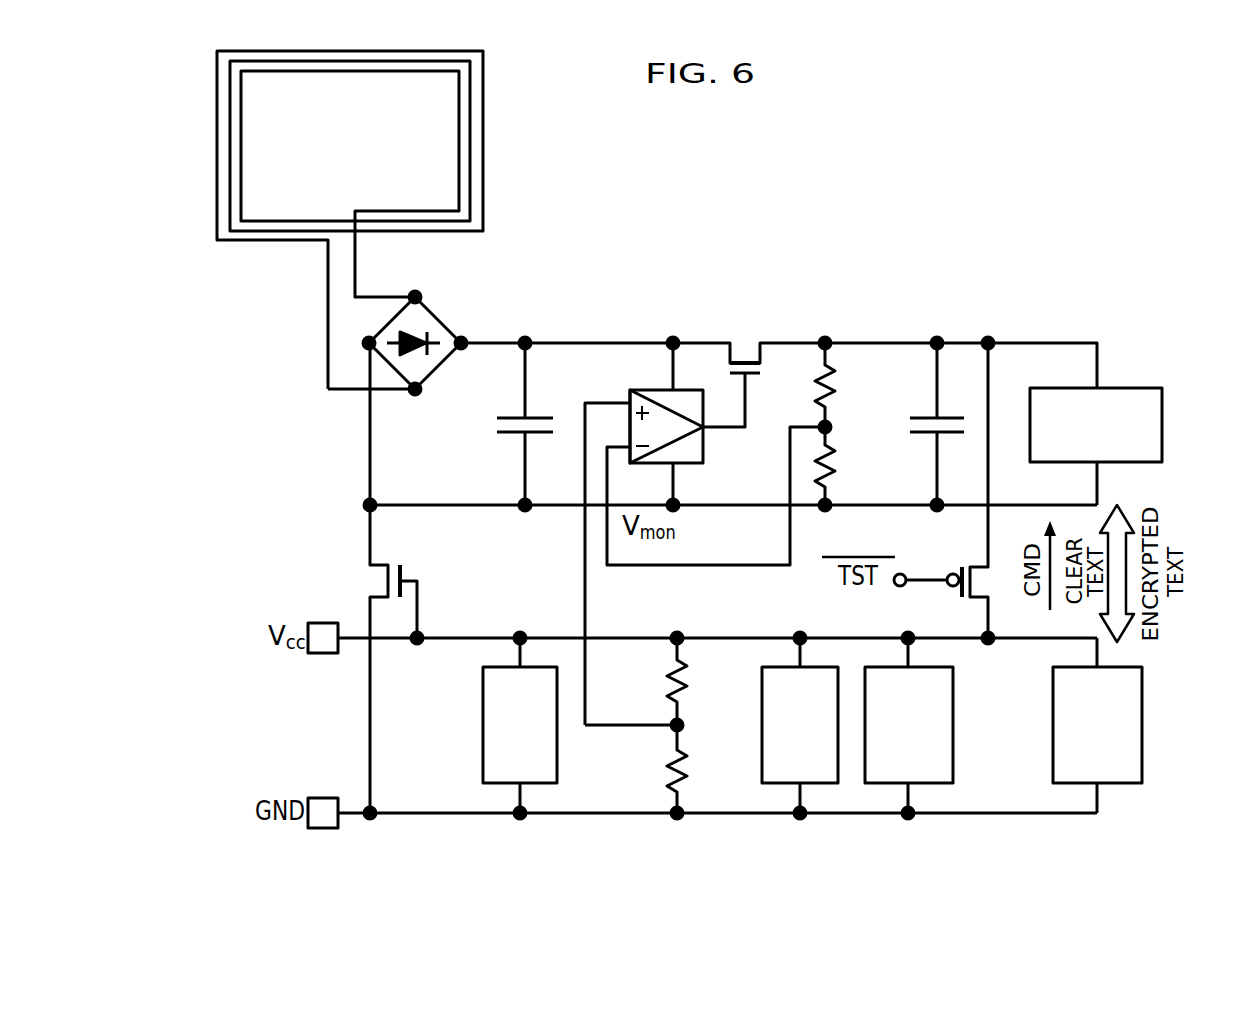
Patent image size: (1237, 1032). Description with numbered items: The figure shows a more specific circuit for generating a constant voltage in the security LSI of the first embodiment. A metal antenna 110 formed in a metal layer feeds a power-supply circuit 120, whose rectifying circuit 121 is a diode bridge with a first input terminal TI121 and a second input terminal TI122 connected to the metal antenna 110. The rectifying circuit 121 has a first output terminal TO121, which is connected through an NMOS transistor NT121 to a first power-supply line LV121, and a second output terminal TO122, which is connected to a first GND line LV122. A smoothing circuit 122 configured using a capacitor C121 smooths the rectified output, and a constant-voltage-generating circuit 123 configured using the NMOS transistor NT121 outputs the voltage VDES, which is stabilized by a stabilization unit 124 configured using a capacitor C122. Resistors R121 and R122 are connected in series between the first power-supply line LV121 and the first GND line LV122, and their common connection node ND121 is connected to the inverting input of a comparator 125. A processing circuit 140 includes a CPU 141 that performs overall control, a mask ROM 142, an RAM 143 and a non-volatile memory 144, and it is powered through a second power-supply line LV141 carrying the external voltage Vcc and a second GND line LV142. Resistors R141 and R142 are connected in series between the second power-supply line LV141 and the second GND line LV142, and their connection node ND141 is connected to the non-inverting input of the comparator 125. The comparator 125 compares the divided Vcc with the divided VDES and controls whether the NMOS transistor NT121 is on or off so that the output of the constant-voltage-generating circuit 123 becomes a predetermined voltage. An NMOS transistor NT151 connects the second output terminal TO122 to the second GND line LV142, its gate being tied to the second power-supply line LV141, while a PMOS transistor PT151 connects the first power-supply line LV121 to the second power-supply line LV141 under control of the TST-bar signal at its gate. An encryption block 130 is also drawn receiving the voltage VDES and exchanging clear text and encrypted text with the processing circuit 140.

The metal antenna 110 is at (485, 126).
The power-supply circuit 120 is at (632, 260).
The rectifying circuit 121 is at (437, 311).
The smoothing circuit 122 is at (536, 383).
The constant-voltage-generating circuit 123 is at (741, 491).
The stabilization unit 124 is at (900, 383).
The comparator 125 is at (633, 388).
The encryption circuit 130 is at (1163, 420).
The processing circuit 140 is at (777, 738).
The CPU 141 is at (1143, 723).
The mask ROM 142 is at (481, 727).
The RAM 143 is at (822, 786).
The non-volatile memory (EEPROM) 144 is at (954, 725).
The first input terminal TI121 is at (410, 294).
The second input terminal TI122 is at (415, 396).
The first output terminal TO121 is at (463, 351).
The second output terminal TO122 is at (366, 344).
The capacitor C121 is at (543, 416).
The capacitor C122 is at (900, 424).
The NMOS transistor NT121 is at (763, 328).
The connection node ND121 is at (820, 426).
The resistor R121 is at (856, 385).
The resistor R122 is at (856, 466).
The first power-supply line LV121 is at (809, 341).
The first GND line LV122 is at (443, 505).
The NMOS transistor NT151 is at (378, 580).
The PMOS transistor PT151 is at (959, 568).
The second power-supply line LV141 is at (625, 637).
The second GND line LV142 is at (428, 811).
The resistor R141 is at (708, 681).
The resistor R142 is at (708, 769).
The connection node ND141 is at (672, 729).